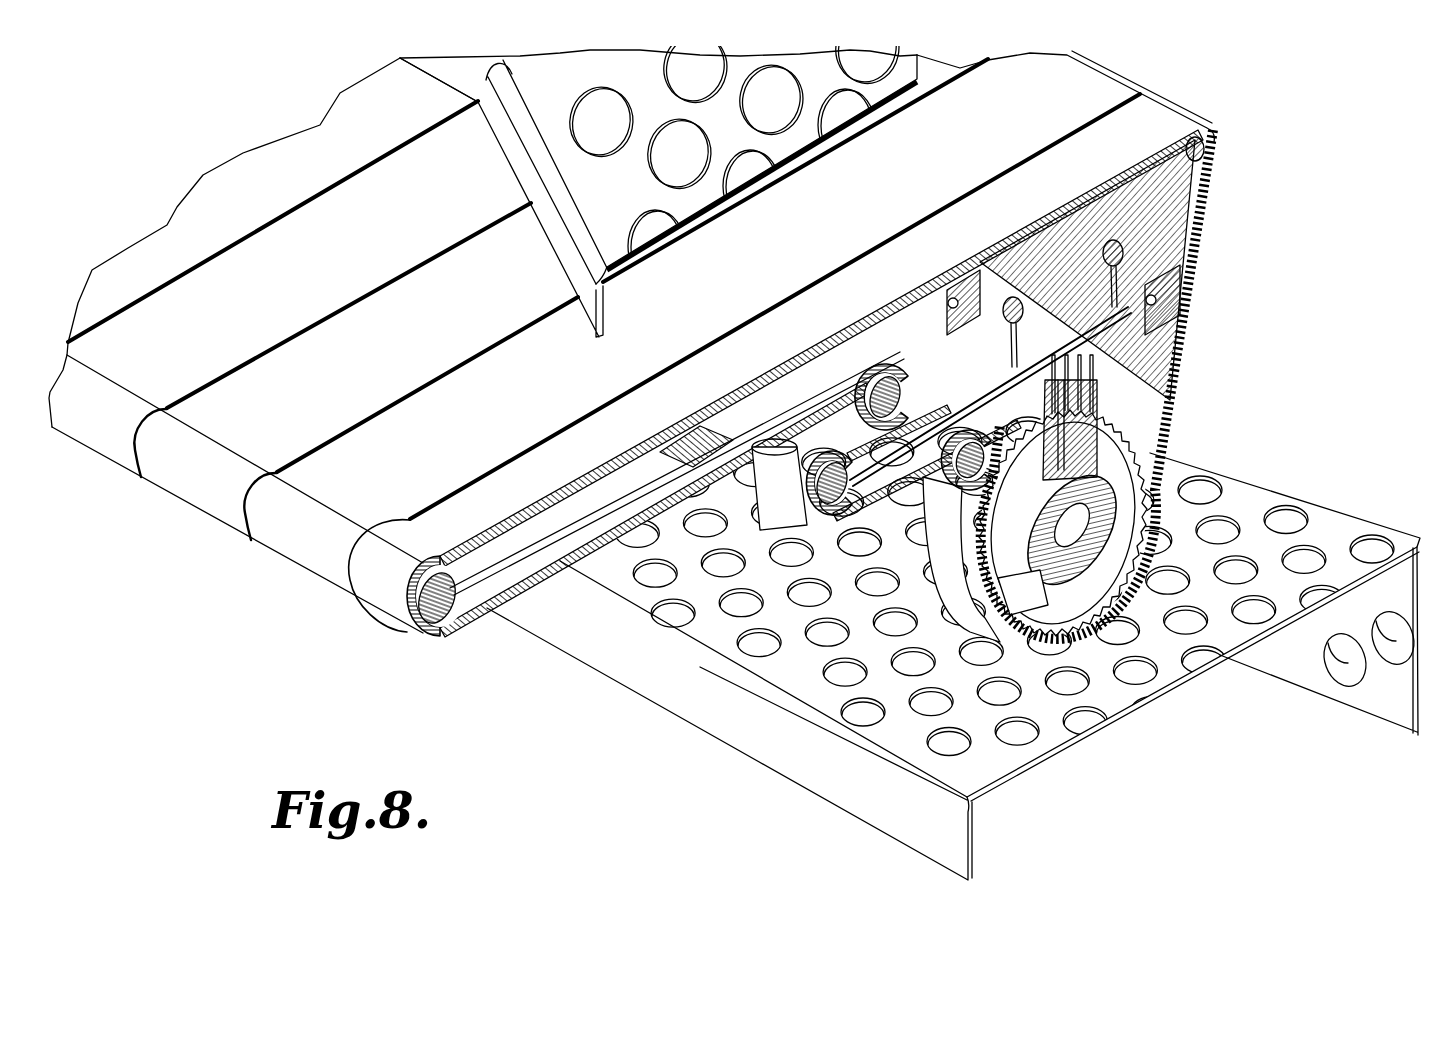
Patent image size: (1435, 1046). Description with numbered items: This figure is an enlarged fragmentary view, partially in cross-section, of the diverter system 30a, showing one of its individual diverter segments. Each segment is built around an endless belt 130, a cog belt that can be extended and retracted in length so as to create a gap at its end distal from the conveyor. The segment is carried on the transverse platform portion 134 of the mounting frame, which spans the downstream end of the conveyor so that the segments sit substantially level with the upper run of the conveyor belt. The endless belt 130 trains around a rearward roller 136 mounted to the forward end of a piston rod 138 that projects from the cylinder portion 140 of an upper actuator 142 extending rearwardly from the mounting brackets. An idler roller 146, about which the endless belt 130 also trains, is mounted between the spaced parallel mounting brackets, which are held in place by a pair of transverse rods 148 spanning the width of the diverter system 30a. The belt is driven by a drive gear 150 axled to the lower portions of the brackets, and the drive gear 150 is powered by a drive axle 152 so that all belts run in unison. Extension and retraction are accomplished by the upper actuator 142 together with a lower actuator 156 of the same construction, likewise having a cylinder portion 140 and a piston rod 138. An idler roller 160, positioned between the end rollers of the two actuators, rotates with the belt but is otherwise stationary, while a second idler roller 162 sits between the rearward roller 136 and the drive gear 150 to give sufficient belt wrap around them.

The diverter system 30a is at (152, 105).
The endless belt 130 is at (383, 517).
The transverse platform portion 134 is at (1285, 492).
The rearward roller 136 is at (418, 630).
The piston rod 138 is at (393, 607).
The cylinder portion 140 is at (515, 580).
The actuator 142 is at (492, 622).
The idler roller 146 is at (1217, 150).
The transverse rods 148 is at (1122, 258).
The drive gear 150 is at (1082, 610).
The drive axle 152 is at (1103, 503).
The lower actuator 156 is at (1138, 342).
The idler roller 160 is at (633, 560).
The second idler roller 162 is at (1022, 655).